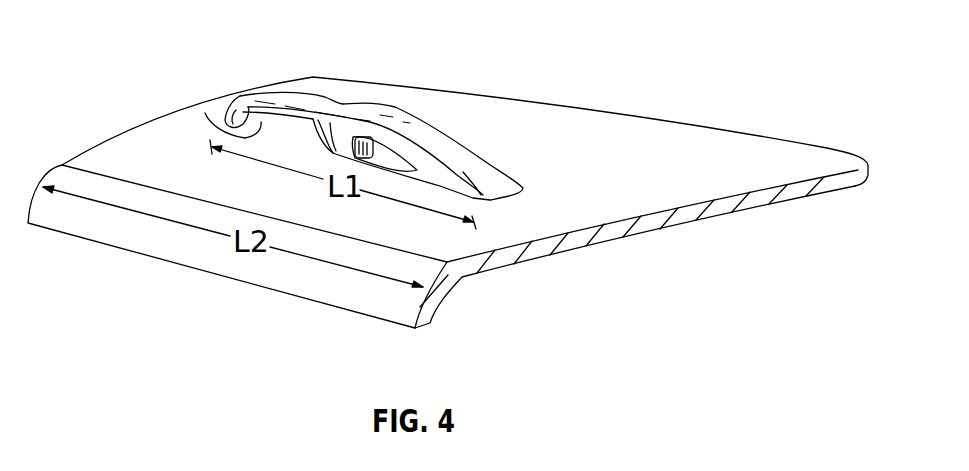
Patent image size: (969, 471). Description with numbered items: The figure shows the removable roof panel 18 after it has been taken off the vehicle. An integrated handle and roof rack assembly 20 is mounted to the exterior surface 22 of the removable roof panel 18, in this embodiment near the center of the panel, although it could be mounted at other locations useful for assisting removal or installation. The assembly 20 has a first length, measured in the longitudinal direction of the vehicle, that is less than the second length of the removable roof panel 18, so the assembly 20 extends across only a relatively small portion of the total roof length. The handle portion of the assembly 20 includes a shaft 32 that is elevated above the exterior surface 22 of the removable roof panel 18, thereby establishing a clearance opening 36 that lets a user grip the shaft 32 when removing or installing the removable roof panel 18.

The removable roof panel 18 is at (607, 129).
The integrated handle and roof rack assembly 20 is at (333, 114).
The exterior surface 22 is at (727, 150).
The shaft 32 is at (272, 98).
The clearance opening 36 is at (205, 113).